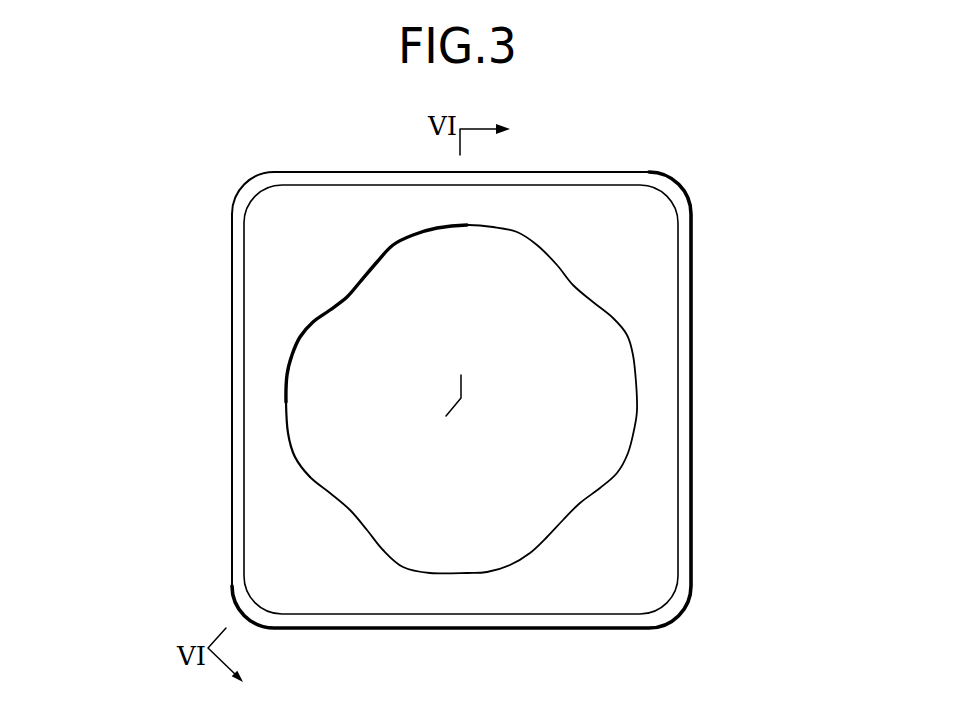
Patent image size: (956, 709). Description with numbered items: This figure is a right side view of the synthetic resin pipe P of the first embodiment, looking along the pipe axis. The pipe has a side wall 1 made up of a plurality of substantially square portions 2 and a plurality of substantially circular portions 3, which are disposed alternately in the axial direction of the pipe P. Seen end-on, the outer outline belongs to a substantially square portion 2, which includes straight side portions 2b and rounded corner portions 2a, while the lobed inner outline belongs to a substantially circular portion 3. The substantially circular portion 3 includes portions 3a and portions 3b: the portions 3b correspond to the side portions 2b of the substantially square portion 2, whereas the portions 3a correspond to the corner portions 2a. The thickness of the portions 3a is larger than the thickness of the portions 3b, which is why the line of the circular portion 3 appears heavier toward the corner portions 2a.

The synthetic resin pipe P is at (712, 184).
The side wall 1 is at (667, 278).
The substantially square portion 2 is at (680, 570).
The corner portion 2a is at (243, 197).
The side portion 2b is at (242, 400).
The substantially circular portion 3 is at (637, 412).
The portion of substantially circular portion corresponding to corner portion 3a is at (333, 289).
The portion of substantially circular portion corresponding to side portion 3b is at (286, 425).